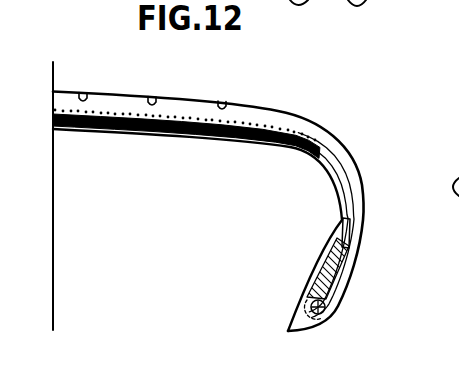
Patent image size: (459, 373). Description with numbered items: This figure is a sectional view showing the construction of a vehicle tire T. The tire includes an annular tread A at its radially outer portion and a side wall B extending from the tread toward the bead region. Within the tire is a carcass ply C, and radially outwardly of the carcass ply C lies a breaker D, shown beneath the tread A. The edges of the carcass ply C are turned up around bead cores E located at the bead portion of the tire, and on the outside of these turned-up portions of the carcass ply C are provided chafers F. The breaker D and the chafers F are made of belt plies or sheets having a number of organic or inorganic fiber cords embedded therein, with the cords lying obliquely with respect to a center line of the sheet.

The annular tread A is at (128, 103).
The breaker D is at (262, 122).
The tire T is at (337, 124).
The carcass ply C is at (342, 173).
The side wall B is at (357, 206).
The chafers F is at (327, 292).
The bead cores E is at (325, 315).